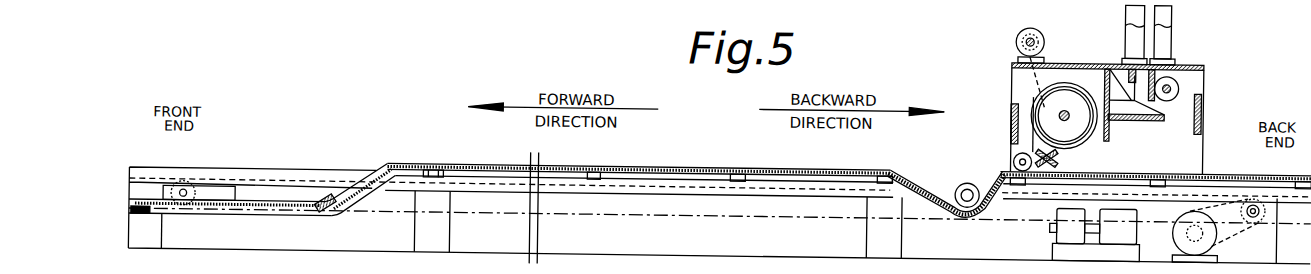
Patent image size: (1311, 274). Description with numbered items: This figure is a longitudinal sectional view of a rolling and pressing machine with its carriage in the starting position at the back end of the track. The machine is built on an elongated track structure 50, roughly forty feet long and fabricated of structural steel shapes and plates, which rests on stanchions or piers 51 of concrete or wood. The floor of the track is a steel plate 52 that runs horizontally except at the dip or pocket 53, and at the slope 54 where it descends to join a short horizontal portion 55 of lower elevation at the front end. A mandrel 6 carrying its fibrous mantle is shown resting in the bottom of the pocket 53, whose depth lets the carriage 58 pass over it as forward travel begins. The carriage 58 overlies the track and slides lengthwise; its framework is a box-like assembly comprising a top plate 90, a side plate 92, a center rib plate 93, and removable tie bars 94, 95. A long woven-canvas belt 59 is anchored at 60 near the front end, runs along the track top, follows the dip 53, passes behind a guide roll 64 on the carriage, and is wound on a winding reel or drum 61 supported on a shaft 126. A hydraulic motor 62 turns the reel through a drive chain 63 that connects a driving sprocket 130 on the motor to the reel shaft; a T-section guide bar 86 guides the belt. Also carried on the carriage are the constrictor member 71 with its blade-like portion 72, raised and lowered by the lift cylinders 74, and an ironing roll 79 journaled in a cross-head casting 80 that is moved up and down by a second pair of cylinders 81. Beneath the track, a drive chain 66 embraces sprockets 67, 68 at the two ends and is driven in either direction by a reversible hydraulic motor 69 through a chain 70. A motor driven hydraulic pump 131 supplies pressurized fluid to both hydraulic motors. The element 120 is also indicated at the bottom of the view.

The mandrel 6 is at (967, 169).
The track structure 50 is at (426, 162).
The stanchions or piers 51 is at (165, 238).
The steel plate 52 is at (686, 160).
The dip or pocket 53 is at (944, 178).
The slope 54 is at (344, 176).
The short horizontal portion 55 is at (237, 198).
The carriage 58 is at (1006, 70).
The woven-canvas belt 59 is at (1012, 114).
The anchorage 60 is at (322, 196).
The winding reel or drum 61 is at (1078, 128).
The hydraulic motor 62 is at (1014, 33).
The drive chain 63 is at (1045, 48).
The guide roll 64 is at (1013, 146).
The drive chain 66 is at (614, 209).
The sprocket 67 is at (184, 185).
The sprocket 68 is at (1266, 198).
The hydraulic motor 69 is at (1212, 228).
The chain 70 is at (1238, 214).
The constrictor member 71 is at (1128, 108).
The blade-like portion 72 is at (1160, 104).
The cylinders 74 is at (1123, 14).
The ironing roll 79 is at (1178, 73).
The cross-head casting 80 is at (1172, 53).
The cylinders 81 is at (1169, 14).
The guide bar 86 is at (1053, 148).
The top plate 90 is at (1085, 51).
The side plate 92 is at (1203, 135).
The center rib plate 93 is at (1107, 129).
The reinforcing bar or tie bar 94 is at (1011, 95).
The reinforcing bar or tie bar 95 is at (1201, 98).
The lower element 120 is at (965, 268).
The shaft 126 is at (1063, 98).
The driving sprocket 130 is at (1032, 26).
The motor driven hydraulic pump 131 is at (1137, 216).